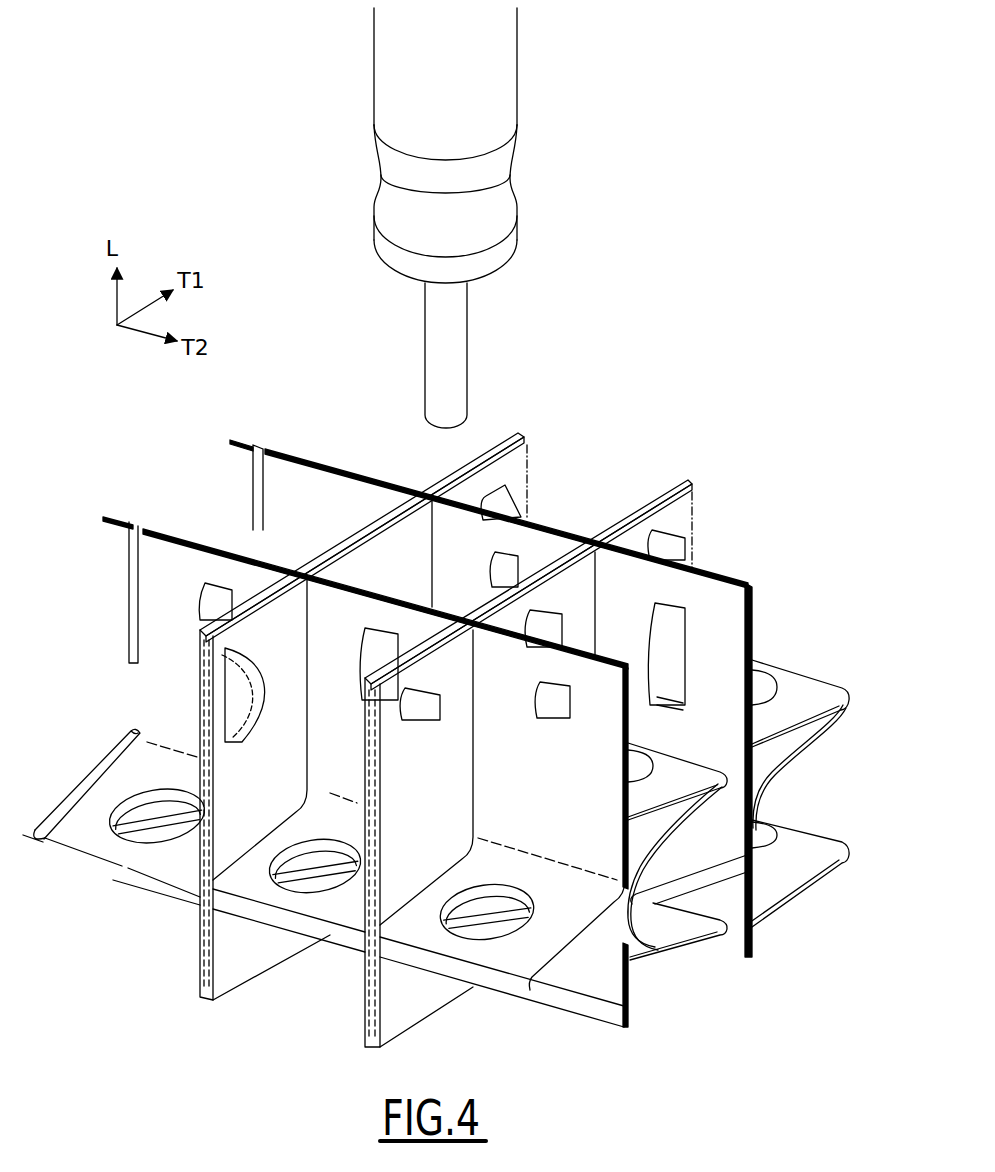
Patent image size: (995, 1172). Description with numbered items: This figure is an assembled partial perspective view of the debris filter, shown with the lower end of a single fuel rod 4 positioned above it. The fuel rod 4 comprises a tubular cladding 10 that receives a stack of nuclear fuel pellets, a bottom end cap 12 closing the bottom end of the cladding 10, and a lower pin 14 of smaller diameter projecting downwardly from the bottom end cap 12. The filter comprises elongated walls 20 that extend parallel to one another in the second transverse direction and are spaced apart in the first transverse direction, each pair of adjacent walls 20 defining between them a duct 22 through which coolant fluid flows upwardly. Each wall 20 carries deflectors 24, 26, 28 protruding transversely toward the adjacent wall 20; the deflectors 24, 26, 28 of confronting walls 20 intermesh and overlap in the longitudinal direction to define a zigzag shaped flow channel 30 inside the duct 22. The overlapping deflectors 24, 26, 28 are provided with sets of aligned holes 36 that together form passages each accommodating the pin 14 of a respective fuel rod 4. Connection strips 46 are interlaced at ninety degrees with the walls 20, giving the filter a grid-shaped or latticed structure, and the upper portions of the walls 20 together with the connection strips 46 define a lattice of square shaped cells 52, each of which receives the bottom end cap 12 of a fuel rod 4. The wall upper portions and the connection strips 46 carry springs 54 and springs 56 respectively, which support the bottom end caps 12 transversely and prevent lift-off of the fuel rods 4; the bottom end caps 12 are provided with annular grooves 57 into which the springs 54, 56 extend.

The fuel rod 4 is at (493, 218).
The tubular cladding 10 is at (508, 67).
The annular groove 57 is at (512, 207).
The bottom end cap 12 is at (512, 236).
The lower pin 14 is at (457, 326).
The wall 20 is at (187, 524).
The duct 22 is at (717, 666).
The connection strip 46 is at (520, 426).
The cell 52 is at (554, 514).
The spring 54 is at (675, 612).
The spring 56 is at (545, 535).
The deflector 26 is at (650, 990).
The hole 36 is at (148, 830).
The deflector 24 is at (790, 893).
The deflector 28 is at (530, 983).
The zigzag shaped flow channel 30 is at (770, 880).